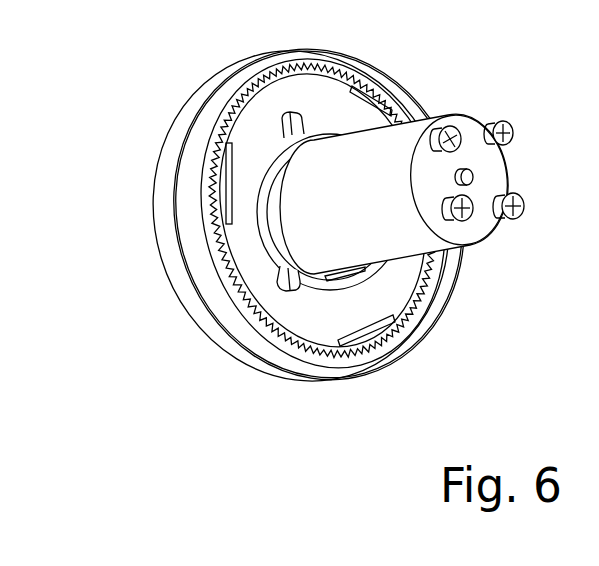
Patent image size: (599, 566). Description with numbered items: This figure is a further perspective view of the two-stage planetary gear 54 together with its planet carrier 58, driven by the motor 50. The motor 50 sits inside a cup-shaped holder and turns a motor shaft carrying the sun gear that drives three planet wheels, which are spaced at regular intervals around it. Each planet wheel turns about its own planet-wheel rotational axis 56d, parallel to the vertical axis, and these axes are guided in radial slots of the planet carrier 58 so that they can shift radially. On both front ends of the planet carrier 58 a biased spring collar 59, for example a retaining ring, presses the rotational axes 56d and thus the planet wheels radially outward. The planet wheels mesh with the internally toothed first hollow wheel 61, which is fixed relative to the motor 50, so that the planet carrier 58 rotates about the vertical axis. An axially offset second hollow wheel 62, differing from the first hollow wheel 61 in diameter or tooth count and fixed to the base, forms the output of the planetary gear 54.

The planetary gear 54 is at (269, 235).
The motor 50 is at (397, 244).
The planet-wheel rotational axis 56d is at (290, 282).
The planet carrier 58 is at (327, 328).
The spring collar 59 is at (277, 247).
The first hollow wheel 61 is at (208, 281).
The second hollow wheel 62 is at (173, 243).